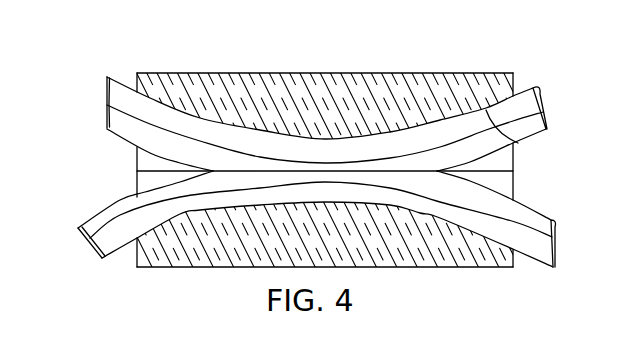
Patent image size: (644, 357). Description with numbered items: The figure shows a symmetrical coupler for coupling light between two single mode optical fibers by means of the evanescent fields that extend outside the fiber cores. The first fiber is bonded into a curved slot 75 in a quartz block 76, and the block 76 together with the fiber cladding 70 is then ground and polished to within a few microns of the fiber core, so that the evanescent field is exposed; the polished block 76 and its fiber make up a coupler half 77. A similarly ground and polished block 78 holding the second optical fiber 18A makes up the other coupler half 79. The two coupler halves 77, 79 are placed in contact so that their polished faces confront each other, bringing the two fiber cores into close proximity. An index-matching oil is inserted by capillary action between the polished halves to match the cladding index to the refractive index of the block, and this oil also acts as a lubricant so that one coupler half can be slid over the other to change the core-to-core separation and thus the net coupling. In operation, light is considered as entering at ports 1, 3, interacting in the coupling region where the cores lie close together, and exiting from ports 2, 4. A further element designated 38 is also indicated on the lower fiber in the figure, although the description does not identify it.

The port 1 is at (99, 97).
The port 2 is at (554, 100).
The port 3 is at (84, 248).
The port 4 is at (565, 253).
The cladding 70 is at (325, 117).
The curved slot 75 is at (518, 143).
The quartz block 76 is at (328, 142).
The coupler half 77 is at (204, 63).
The block 78 is at (328, 210).
The coupler half 79 is at (385, 279).
The lower optical fiber 38 is at (317, 246).
The optical fiber 18A is at (121, 247).